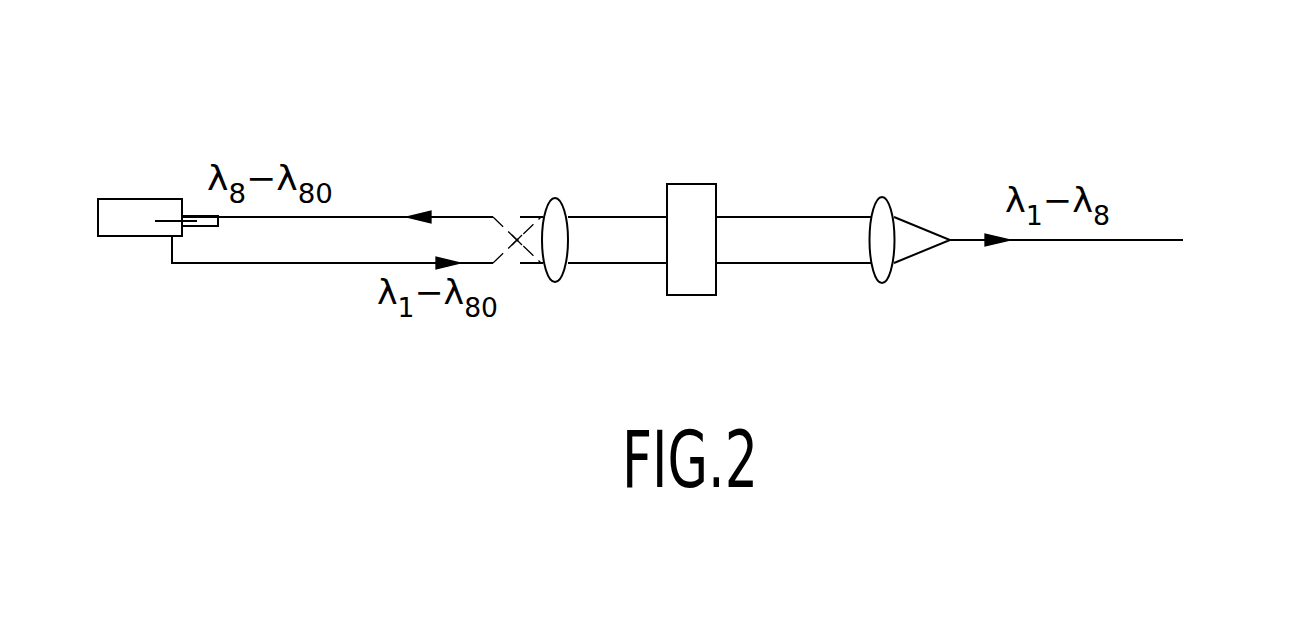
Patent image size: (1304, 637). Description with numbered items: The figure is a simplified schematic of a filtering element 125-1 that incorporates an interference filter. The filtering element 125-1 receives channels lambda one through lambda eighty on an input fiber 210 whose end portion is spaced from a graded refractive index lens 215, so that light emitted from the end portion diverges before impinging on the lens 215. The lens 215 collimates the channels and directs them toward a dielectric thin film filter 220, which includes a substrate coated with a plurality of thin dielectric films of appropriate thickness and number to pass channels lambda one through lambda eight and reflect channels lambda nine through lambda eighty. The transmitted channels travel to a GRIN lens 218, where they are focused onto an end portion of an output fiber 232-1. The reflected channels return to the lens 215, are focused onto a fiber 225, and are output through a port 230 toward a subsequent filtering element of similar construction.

The port 230 is at (140, 199).
The fiber 225 is at (372, 215).
The input fiber 210 is at (315, 264).
The graded refractive index (GRIN) lens 215 is at (553, 279).
The dielectric thin film filter 220 is at (690, 185).
The GRIN lens 218 is at (881, 198).
The output fiber 232-1 is at (1162, 238).
The filtering element 125-1 is at (983, 368).